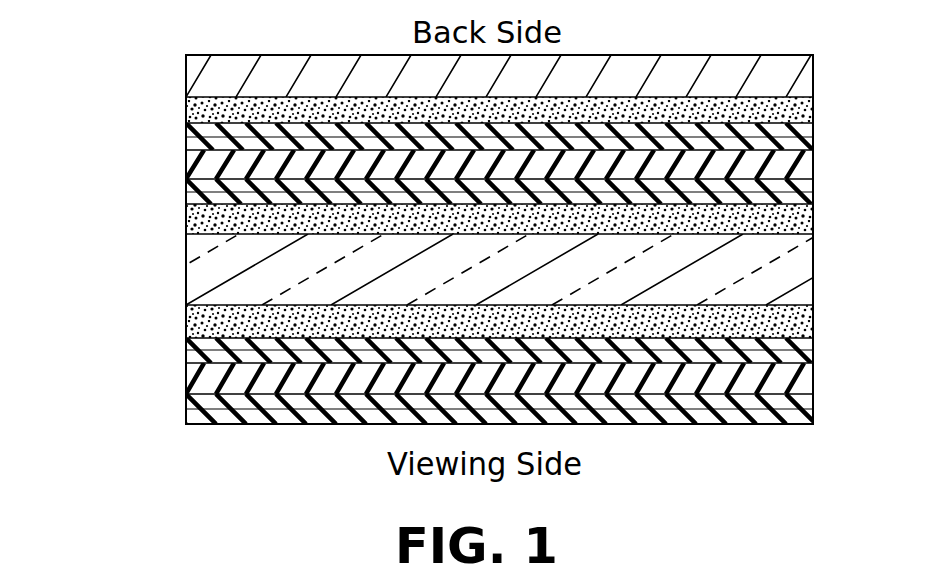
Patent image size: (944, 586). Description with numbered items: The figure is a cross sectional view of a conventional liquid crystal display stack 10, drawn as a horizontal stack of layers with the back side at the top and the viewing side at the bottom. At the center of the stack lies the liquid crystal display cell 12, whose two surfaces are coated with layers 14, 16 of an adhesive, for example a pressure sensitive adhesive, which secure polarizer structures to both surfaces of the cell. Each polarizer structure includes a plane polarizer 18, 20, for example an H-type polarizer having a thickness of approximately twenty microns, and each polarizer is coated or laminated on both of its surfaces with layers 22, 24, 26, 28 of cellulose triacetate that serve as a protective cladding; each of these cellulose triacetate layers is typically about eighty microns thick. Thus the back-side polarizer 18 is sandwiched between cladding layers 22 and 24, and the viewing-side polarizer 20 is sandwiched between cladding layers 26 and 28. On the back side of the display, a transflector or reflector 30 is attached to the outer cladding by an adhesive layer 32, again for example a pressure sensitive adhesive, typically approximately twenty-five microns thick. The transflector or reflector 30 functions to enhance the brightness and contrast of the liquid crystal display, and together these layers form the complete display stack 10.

The liquid crystal display stack 10 is at (112, 262).
The liquid crystal display cell 12 is at (813, 268).
The adhesive layer 14 is at (813, 215).
The adhesive layer 16 is at (813, 322).
The plane polarizer 18 is at (813, 163).
The plane polarizer 20 is at (813, 383).
The cellulose triacetate layer 22 is at (186, 135).
The cellulose triacetate layer 24 is at (186, 195).
The cellulose triacetate layer 26 is at (186, 350).
The cellulose triacetate layer 28 is at (186, 410).
The transflector or reflector 30 is at (813, 72).
The adhesive layer 32 is at (813, 110).